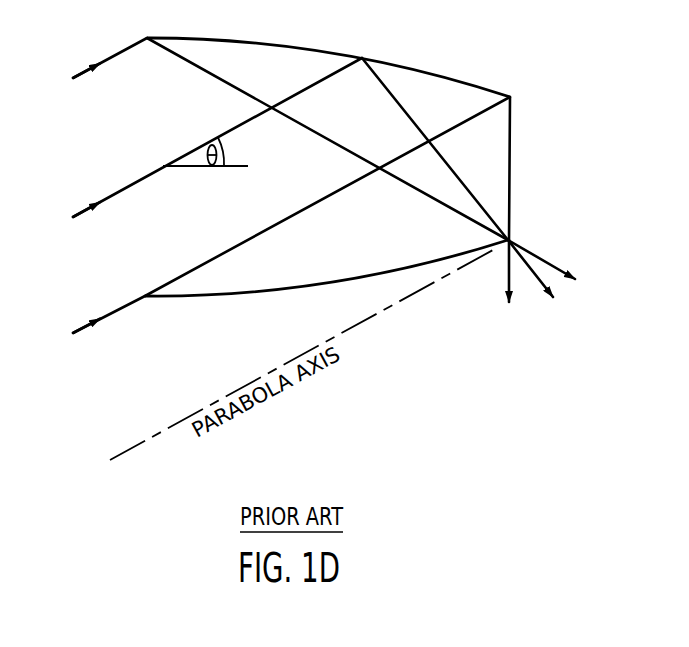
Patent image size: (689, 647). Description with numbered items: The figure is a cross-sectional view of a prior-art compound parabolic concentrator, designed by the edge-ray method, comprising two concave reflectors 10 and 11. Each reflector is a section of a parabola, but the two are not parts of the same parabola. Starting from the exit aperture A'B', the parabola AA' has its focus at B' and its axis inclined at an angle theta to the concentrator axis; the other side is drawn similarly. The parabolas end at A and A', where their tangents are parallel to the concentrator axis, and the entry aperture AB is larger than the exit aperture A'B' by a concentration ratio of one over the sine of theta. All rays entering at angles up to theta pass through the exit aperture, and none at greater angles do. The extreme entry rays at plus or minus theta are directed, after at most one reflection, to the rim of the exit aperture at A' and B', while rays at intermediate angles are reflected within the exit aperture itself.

The concave reflector 10 is at (442, 73).
The concave reflector 11 is at (352, 278).
The entry aperture endpoint A is at (113, 47).
The entry aperture endpoint B is at (109, 302).
The exit aperture rim point A' is at (522, 162).
The exit aperture rim point and focus B' is at (541, 262).